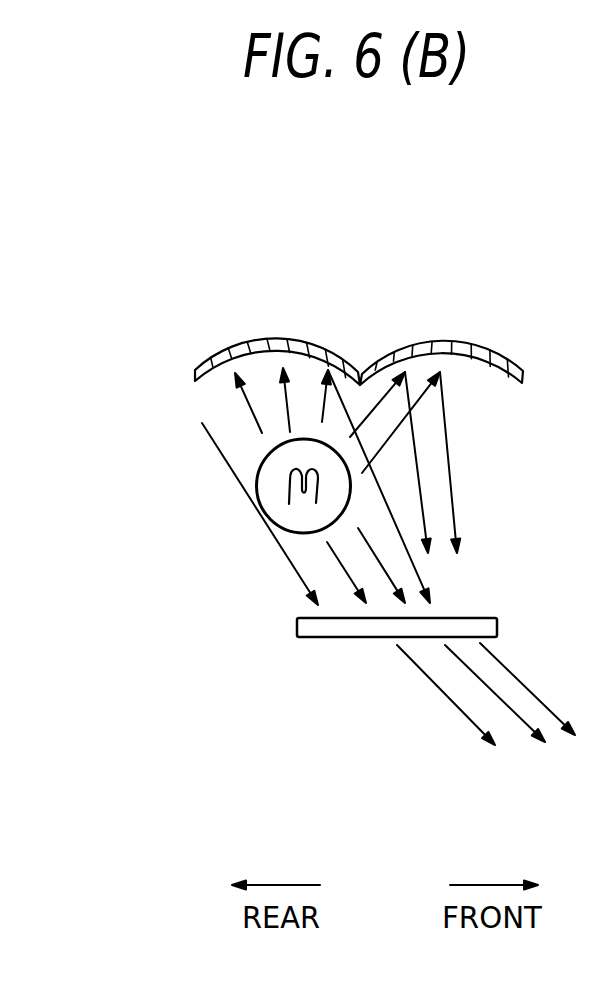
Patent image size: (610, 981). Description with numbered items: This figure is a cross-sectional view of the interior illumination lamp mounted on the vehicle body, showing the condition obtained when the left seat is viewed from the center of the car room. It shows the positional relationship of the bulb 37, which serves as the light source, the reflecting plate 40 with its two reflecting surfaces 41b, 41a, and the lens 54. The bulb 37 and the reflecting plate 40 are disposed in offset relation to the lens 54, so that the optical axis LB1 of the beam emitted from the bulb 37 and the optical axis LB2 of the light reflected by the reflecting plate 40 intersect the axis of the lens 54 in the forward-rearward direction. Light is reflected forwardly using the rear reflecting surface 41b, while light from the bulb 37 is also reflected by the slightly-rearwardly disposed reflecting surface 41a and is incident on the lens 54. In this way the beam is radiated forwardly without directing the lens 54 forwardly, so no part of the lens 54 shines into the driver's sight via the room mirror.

The reflecting plate 40 is at (482, 262).
The reflecting surface 41b is at (280, 340).
The reflecting surface 41a is at (443, 340).
The bulb 37 is at (270, 496).
The lens 54 is at (480, 617).
The optical axis of light from the bulb LB1 is at (340, 563).
The optical axis of reflected light LB2 is at (226, 460).